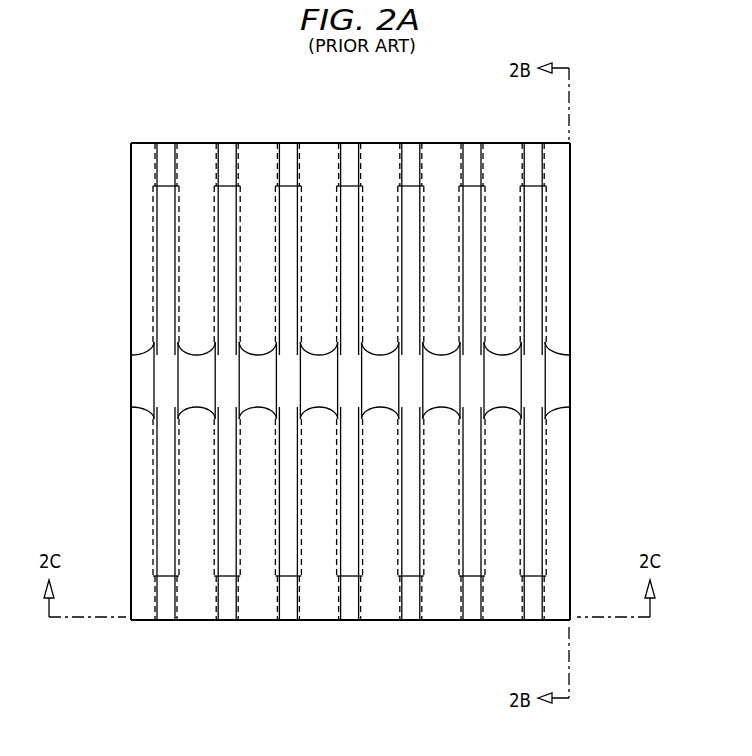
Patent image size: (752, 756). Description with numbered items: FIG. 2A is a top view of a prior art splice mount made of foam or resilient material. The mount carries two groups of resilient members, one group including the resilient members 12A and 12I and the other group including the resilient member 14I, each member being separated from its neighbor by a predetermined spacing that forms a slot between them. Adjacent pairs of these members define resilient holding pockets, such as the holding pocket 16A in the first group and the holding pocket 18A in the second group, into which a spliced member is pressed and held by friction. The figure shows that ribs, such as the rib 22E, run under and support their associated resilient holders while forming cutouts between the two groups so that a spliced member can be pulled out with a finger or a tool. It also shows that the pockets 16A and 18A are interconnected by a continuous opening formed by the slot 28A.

The resilient member 12A is at (143, 525).
The resilient member 12I is at (556, 524).
The resilient member 14I is at (556, 174).
The resilient holding pocket 16A is at (162, 450).
The resilient holding pocket 18A is at (162, 270).
The rib 22E is at (382, 399).
The slot 28A is at (180, 368).